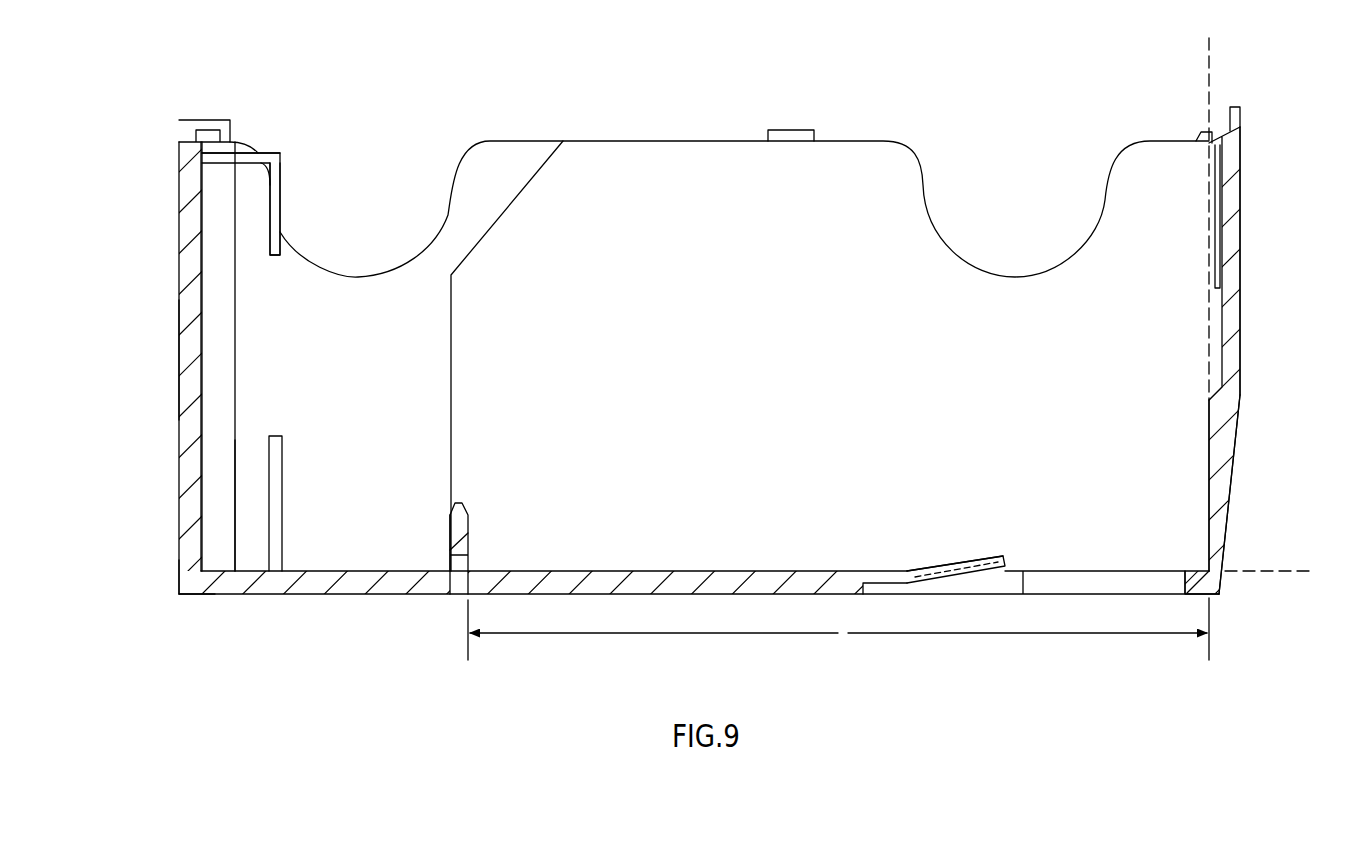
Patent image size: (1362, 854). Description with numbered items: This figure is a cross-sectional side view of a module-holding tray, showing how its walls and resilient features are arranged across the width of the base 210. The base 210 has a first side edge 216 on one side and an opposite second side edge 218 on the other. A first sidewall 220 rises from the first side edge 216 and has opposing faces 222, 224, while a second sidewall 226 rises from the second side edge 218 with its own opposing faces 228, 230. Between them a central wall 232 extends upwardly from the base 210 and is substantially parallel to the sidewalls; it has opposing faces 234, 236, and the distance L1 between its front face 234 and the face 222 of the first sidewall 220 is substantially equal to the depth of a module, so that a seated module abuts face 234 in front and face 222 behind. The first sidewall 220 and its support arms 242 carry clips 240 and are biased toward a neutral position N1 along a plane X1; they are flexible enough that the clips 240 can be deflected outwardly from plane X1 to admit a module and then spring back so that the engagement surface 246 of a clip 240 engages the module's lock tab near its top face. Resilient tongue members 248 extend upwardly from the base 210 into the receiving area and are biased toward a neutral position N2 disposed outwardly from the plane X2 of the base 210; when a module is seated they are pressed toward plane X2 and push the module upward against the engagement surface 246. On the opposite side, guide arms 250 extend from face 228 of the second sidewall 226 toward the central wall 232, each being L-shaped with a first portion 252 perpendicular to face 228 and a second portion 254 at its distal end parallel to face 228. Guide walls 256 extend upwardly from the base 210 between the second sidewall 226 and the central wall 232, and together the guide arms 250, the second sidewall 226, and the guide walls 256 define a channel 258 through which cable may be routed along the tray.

The base 210 is at (763, 582).
The first side edge 216 is at (1228, 588).
The second side edge 218 is at (177, 588).
The first sidewall 220 is at (1218, 414).
The face of first sidewall 222 is at (1204, 497).
The face of first sidewall 224 is at (1230, 495).
The second sidewall 226 is at (190, 217).
The face of second sidewall 228 is at (206, 383).
The face of second sidewall 230 is at (176, 356).
The central wall 232 is at (458, 503).
The face of central wall 234 is at (473, 534).
The face of central wall 236 is at (448, 534).
The clip 240 is at (1226, 128).
The support arm 242 is at (1230, 279).
The engagement surface 246 is at (1206, 148).
The resilient tongue member 248 is at (993, 561).
The guide arm 250 is at (296, 168).
The first portion of guide arm 252 is at (257, 160).
The second portion of guide arm 254 is at (275, 215).
The guide wall 256 is at (277, 483).
The channel 258 is at (250, 457).
The neutral position N1 is at (1268, 176).
The neutral position N2 is at (942, 551).
The plane X1 is at (1208, 60).
The plane X2 is at (1268, 571).
The distance L1 is at (838, 636).